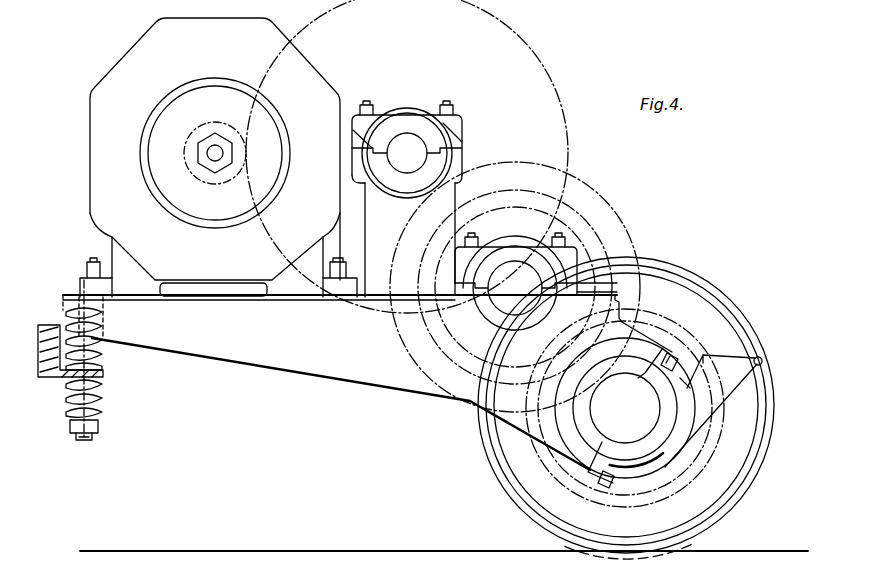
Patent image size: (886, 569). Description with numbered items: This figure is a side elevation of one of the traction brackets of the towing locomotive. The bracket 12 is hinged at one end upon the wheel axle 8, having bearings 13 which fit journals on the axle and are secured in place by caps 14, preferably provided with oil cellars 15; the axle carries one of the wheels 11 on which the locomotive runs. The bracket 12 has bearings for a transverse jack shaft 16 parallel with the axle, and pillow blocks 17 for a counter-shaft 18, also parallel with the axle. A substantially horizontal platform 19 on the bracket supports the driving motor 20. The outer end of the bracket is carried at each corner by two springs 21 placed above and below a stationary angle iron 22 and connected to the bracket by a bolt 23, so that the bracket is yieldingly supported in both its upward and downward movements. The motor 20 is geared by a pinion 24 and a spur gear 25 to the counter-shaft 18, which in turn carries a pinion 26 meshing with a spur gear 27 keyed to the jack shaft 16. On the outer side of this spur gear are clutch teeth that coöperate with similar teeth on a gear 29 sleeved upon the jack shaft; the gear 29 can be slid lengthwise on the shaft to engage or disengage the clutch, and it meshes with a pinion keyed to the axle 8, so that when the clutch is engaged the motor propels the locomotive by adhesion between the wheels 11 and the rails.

The wheel axle 8 is at (625, 408).
The wheels 11 is at (712, 489).
The bracket 12 is at (350, 380).
The bearings 13 is at (583, 427).
The caps 14 is at (657, 437).
The oil cellars 15 is at (713, 411).
The jack shaft 16 is at (516, 281).
The pillow blocks 17 is at (407, 236).
The counter-shaft 18 is at (407, 153).
The platform 19 is at (228, 299).
The driving motor 20 is at (218, 157).
The springs 21 is at (103, 355).
The angle iron 22 is at (103, 375).
The bolt 23 is at (88, 440).
The pinion 24 is at (215, 176).
The spur gear 25 is at (273, 244).
The pinion 26 is at (450, 148).
The spur gear 27 is at (511, 160).
The gear 29 is at (586, 217).